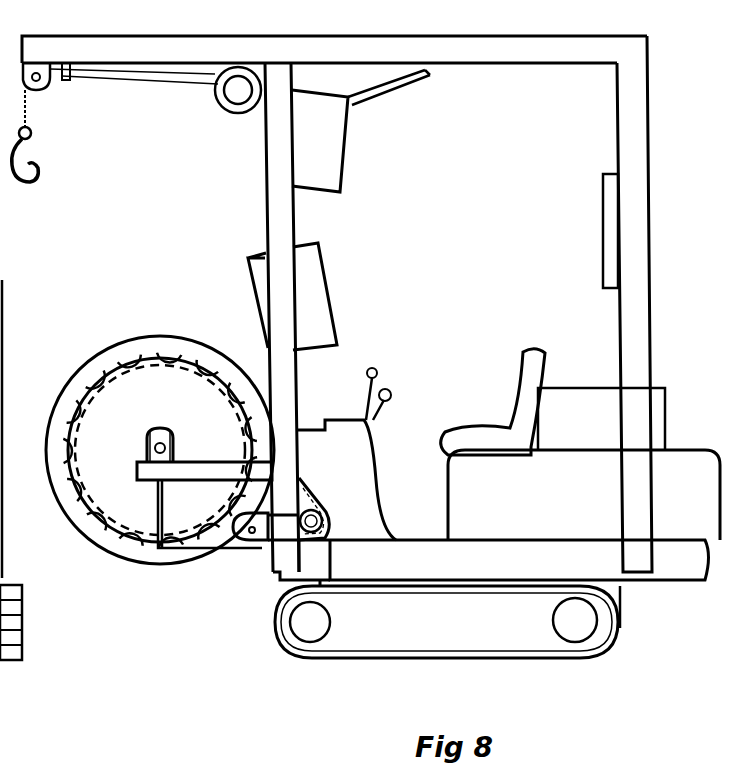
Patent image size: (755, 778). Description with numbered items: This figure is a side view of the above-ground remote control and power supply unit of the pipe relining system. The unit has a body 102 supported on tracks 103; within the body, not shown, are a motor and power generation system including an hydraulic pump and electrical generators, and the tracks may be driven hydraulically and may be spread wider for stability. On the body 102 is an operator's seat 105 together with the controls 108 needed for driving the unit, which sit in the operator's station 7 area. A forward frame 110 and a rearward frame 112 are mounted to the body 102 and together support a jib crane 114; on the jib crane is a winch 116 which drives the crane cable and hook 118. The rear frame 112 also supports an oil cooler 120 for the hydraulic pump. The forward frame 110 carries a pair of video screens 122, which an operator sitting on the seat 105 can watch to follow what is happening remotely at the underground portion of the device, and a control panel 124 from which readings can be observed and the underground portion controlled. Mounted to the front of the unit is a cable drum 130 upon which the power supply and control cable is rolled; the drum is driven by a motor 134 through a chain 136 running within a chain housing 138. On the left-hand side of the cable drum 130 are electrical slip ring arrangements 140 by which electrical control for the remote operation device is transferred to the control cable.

The operator cab 7 is at (358, 503).
The body 102 is at (560, 518).
The tracks 103 is at (528, 633).
The operator's seat 105 is at (505, 428).
The controls 108 is at (375, 368).
The forward frame 110 is at (280, 218).
The rearward frame 112 is at (630, 146).
The jib crane 114 is at (162, 50).
The winch 116 is at (280, 157).
The crane cable and hook 118 is at (38, 153).
The oil cooler 120 is at (605, 266).
The video screens 122 is at (325, 128).
The control panel 124 is at (318, 322).
The cable drum 130 is at (88, 525).
The motor 134 is at (340, 516).
The chain 136 is at (175, 530).
The chain housing 138 is at (147, 395).
The electrical slip ring arrangements 140 is at (160, 442).